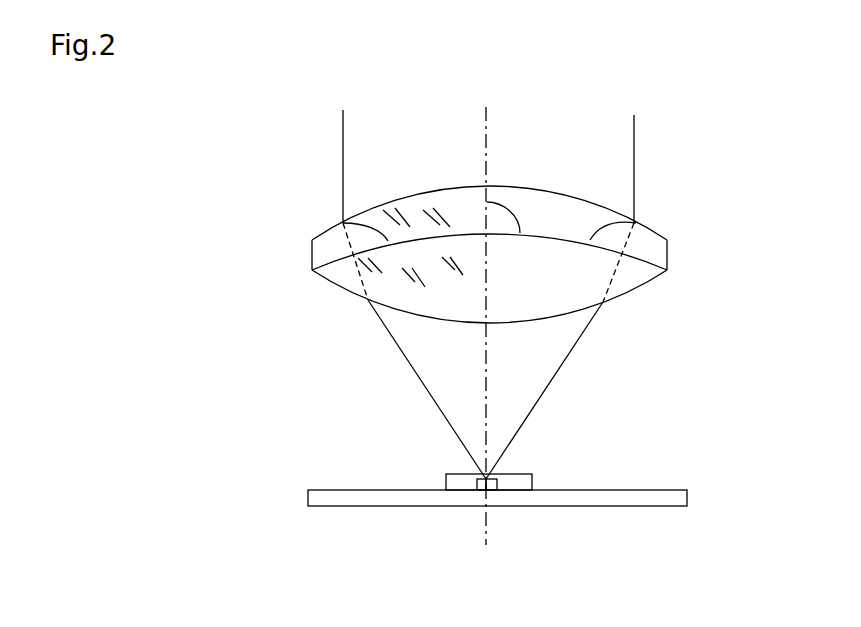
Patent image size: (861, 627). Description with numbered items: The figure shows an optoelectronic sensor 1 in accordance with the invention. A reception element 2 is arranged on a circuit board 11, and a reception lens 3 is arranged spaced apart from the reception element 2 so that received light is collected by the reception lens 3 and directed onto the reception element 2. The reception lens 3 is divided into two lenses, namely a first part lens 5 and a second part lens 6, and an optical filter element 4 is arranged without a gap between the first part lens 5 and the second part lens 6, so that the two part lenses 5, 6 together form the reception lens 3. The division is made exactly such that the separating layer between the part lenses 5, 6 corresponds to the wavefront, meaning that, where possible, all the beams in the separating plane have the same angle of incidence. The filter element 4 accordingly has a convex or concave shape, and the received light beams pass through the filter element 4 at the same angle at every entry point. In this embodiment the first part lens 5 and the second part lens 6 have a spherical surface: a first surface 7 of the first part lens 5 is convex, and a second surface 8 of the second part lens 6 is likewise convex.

The optoelectronic sensor 1 is at (722, 147).
The reception element 2 is at (483, 484).
The reception lens 3 is at (471, 224).
The optical filter element 4 is at (553, 236).
The first part lens 5 is at (648, 240).
The second part lens 6 is at (635, 277).
The first surface 7 is at (435, 188).
The second surface 8 is at (342, 295).
The circuit board 11 is at (635, 498).